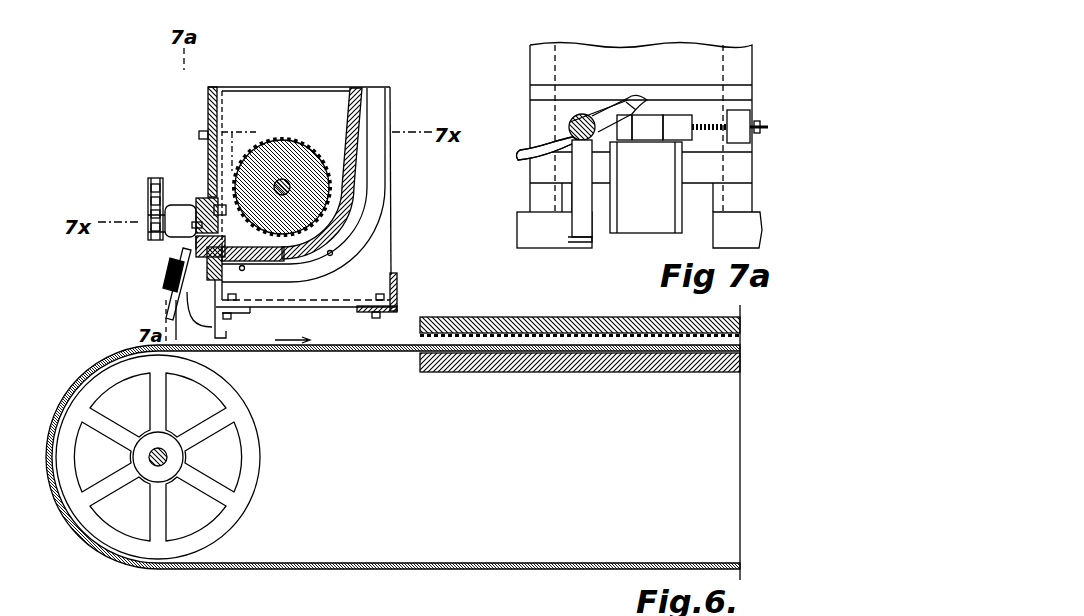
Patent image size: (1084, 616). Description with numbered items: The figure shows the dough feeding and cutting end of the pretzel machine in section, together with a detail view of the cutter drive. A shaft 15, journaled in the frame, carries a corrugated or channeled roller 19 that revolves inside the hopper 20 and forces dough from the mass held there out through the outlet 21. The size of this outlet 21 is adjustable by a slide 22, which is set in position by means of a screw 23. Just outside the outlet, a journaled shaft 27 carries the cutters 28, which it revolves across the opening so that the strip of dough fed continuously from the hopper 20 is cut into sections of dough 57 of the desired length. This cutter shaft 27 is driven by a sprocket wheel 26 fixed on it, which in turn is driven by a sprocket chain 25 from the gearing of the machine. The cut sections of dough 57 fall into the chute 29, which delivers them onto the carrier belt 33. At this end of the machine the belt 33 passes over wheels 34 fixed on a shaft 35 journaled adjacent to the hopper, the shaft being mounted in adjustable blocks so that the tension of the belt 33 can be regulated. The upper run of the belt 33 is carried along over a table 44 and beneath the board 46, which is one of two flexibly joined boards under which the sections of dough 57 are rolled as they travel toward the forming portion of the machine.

In FIG. 6, the shaft 15 is at (290, 187).
In FIG. 6, the corrugated roller 19 is at (288, 150).
In FIG. 6, the hopper 20 is at (209, 104).
In FIG. 7a, the hopper 20 is at (746, 72).
In FIG. 6, the outlet 21 is at (204, 204).
In FIG. 7a, the outlet 21 is at (620, 142).
In FIG. 6, the slide 22 is at (200, 244).
In FIG. 7a, the slide 22 is at (650, 128).
In FIG. 6, the screw 23 is at (196, 228).
In FIG. 7a, the screw 23 is at (736, 124).
In FIG. 6, the sprocket chain 25 is at (150, 202).
In FIG. 6, the sprocket wheel 26 is at (150, 182).
In FIG. 7a, the shaft 27 is at (570, 120).
In FIG. 6, the cutters 28 is at (182, 214).
In FIG. 7a, the cutters 28 is at (640, 118).
In FIG. 6, the chute 29 is at (172, 300).
In FIG. 7a, the chute 29 is at (648, 225).
In FIG. 6, the carrier belt 33 is at (396, 352).
In FIG. 6, the wheels 34 is at (253, 488).
In FIG. 6, the shaft 35 is at (168, 455).
In FIG. 6, the table 44 is at (642, 372).
In FIG. 6, the board 46 is at (497, 318).
In FIG. 6, the sections of dough 57 is at (176, 268).